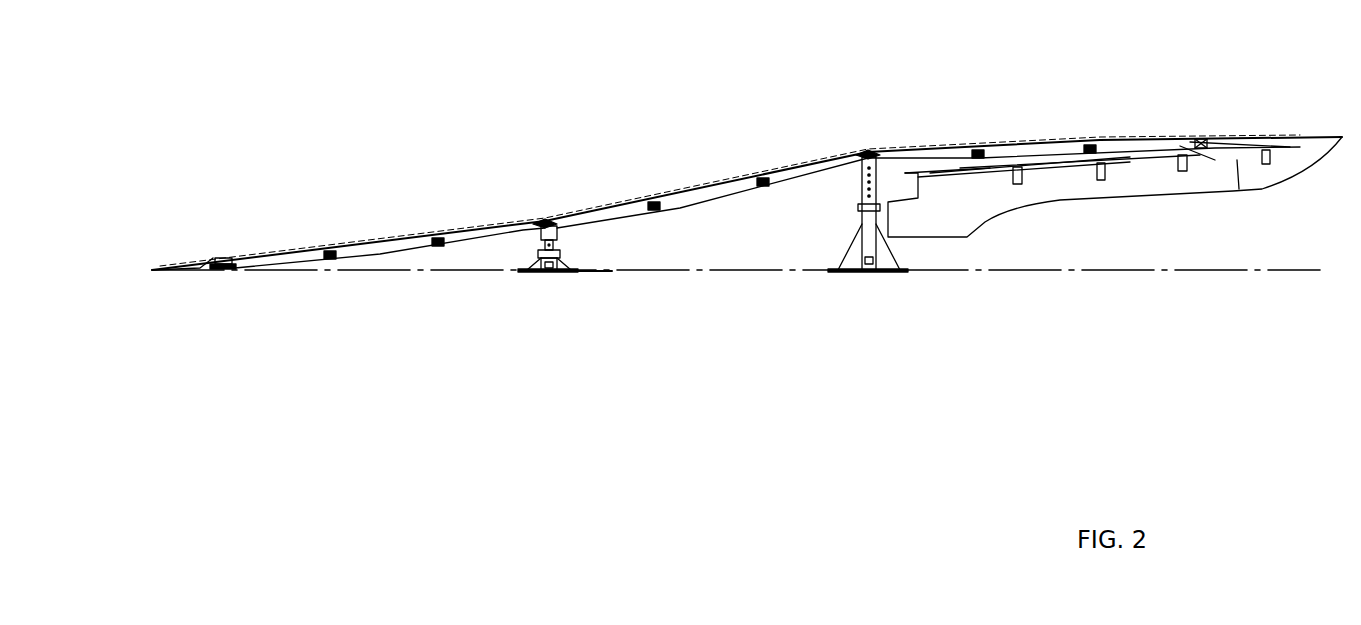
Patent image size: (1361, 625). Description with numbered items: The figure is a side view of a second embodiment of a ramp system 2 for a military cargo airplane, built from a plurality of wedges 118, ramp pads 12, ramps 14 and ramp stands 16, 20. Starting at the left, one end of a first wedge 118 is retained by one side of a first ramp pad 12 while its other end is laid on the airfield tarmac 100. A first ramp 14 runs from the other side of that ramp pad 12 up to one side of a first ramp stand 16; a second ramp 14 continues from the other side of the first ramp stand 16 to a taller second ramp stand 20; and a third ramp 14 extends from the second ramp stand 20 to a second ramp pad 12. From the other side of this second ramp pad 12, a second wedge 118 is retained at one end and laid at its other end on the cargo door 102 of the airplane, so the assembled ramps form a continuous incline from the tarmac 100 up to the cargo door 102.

The C-130 ramp system 2 is at (730, 418).
The ramp pad 12 is at (223, 298).
The ramp 14 is at (387, 219).
The first ramp stand 16 is at (560, 303).
The ramp stand 20 is at (876, 305).
The airfield tarmac 100 is at (733, 268).
The cargo door 102 is at (1117, 197).
The wedge 118 is at (176, 246).